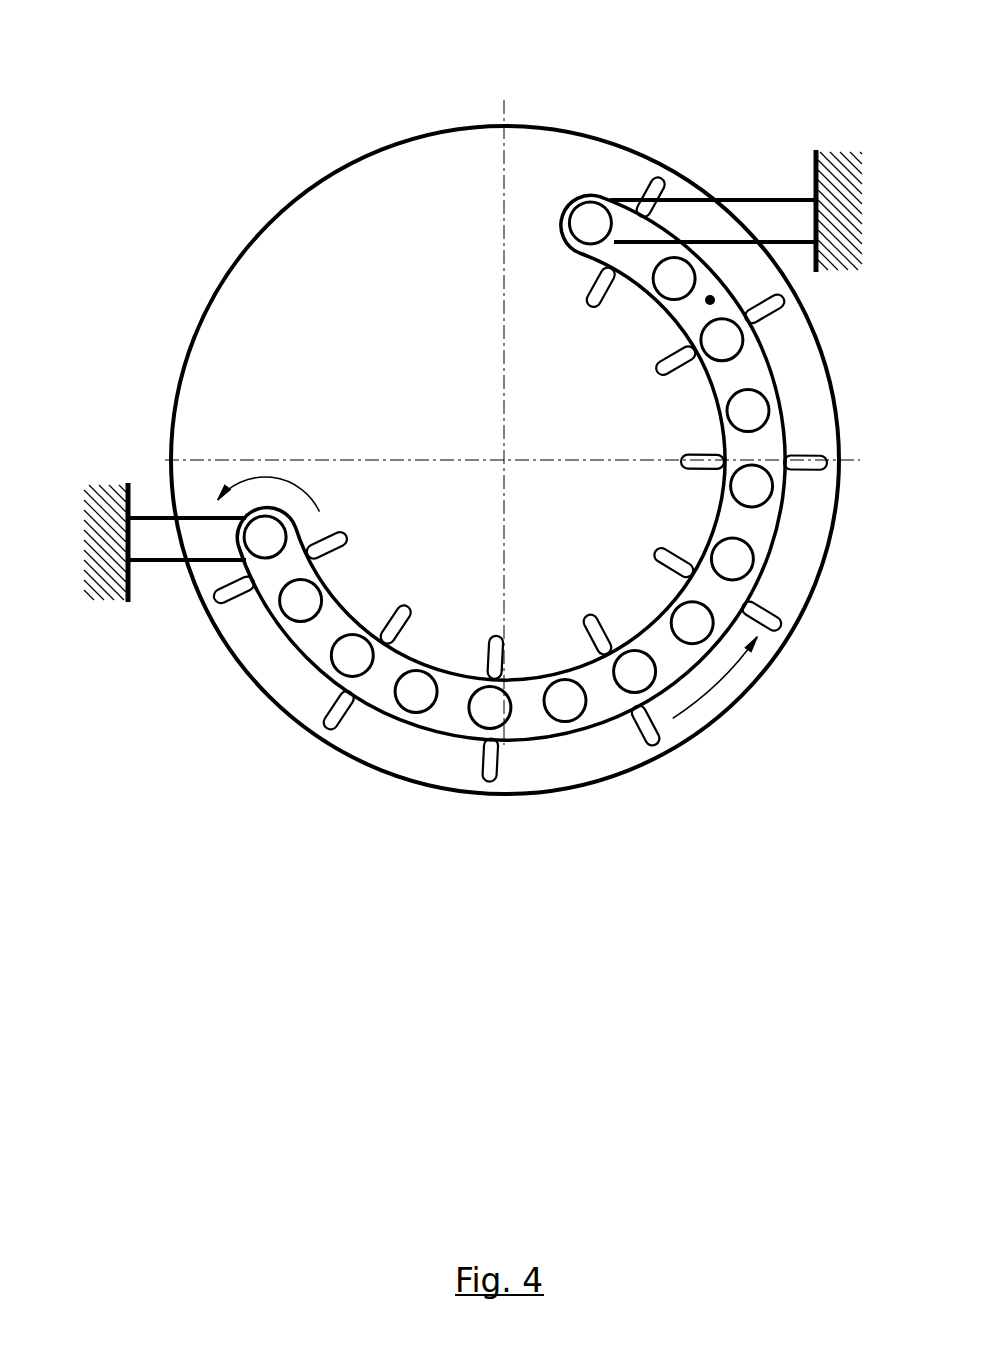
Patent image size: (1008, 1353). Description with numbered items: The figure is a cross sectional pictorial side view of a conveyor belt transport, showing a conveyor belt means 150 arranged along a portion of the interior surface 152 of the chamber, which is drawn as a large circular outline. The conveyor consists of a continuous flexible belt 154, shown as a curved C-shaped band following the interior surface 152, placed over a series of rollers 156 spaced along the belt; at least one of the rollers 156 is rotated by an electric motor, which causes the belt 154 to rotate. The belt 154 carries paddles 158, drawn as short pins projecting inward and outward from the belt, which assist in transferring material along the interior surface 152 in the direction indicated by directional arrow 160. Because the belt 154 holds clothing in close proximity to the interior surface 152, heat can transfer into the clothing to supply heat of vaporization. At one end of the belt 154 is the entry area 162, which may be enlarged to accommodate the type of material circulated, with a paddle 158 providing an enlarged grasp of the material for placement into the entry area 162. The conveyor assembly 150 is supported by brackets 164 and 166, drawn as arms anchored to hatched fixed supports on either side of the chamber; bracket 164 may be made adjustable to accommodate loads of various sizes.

The conveyor belt means 150 is at (710, 295).
The interior surface 152 is at (420, 147).
The continuous flexible belt 154 is at (543, 755).
The rollers 156 is at (313, 690).
The paddles 158 is at (463, 800).
The directional arrow 160 is at (727, 705).
The entry area 162 is at (143, 502).
The bracket 164 is at (152, 577).
The bracket 166 is at (793, 259).